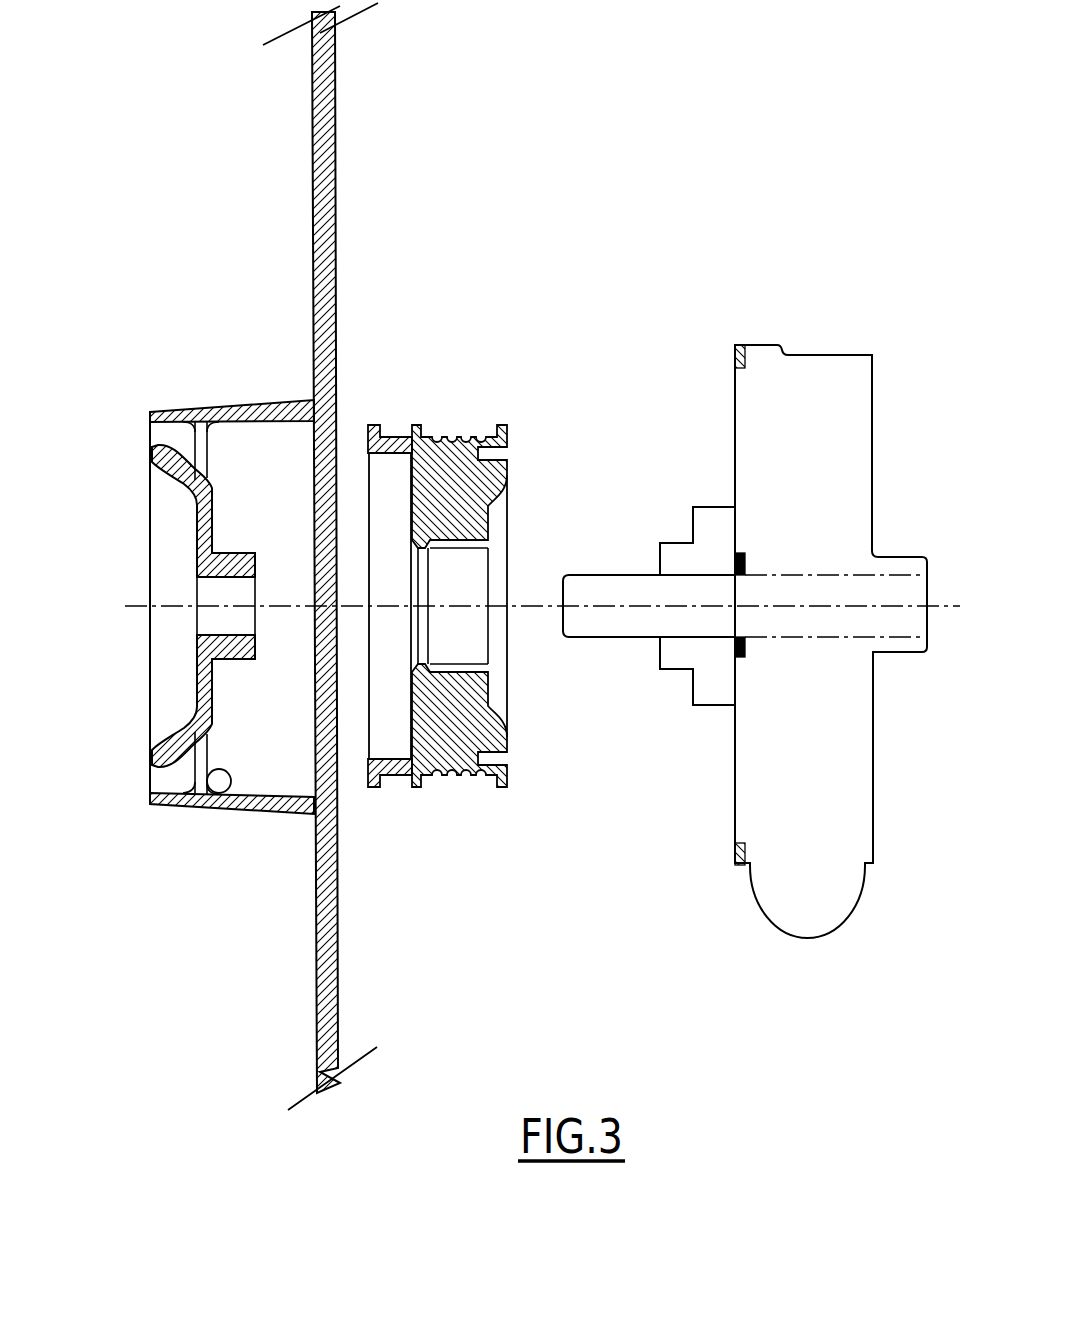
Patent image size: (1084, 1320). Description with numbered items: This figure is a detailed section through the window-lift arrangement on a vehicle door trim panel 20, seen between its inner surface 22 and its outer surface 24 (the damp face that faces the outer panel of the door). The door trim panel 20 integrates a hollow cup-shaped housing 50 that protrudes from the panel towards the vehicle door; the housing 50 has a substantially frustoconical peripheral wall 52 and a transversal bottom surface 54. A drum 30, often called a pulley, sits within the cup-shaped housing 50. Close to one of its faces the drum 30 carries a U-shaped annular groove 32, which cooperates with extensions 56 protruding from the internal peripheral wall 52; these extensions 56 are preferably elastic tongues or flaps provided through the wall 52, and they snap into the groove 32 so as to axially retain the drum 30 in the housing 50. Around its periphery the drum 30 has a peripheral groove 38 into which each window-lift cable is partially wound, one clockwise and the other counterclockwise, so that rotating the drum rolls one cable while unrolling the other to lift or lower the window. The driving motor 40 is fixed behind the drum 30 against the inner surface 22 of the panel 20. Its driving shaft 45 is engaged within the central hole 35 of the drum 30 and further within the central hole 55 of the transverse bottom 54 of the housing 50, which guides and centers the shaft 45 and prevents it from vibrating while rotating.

The door trim panel 20 is at (339, 228).
The inner surface 22 is at (338, 938).
The outer surface 24 is at (312, 287).
The drum 30 is at (455, 597).
The annular groove 32 is at (396, 433).
The central hole 35 is at (447, 585).
The peripheral groove 38 is at (461, 790).
The driving motor 40 is at (760, 344).
The driving shaft 45 is at (599, 639).
The cup-shaped housing 50 is at (205, 625).
The peripheral wall 52 is at (252, 437).
The transversal bottom surface 54 is at (195, 537).
The central hole 55 is at (195, 625).
The extensions 56 is at (222, 815).